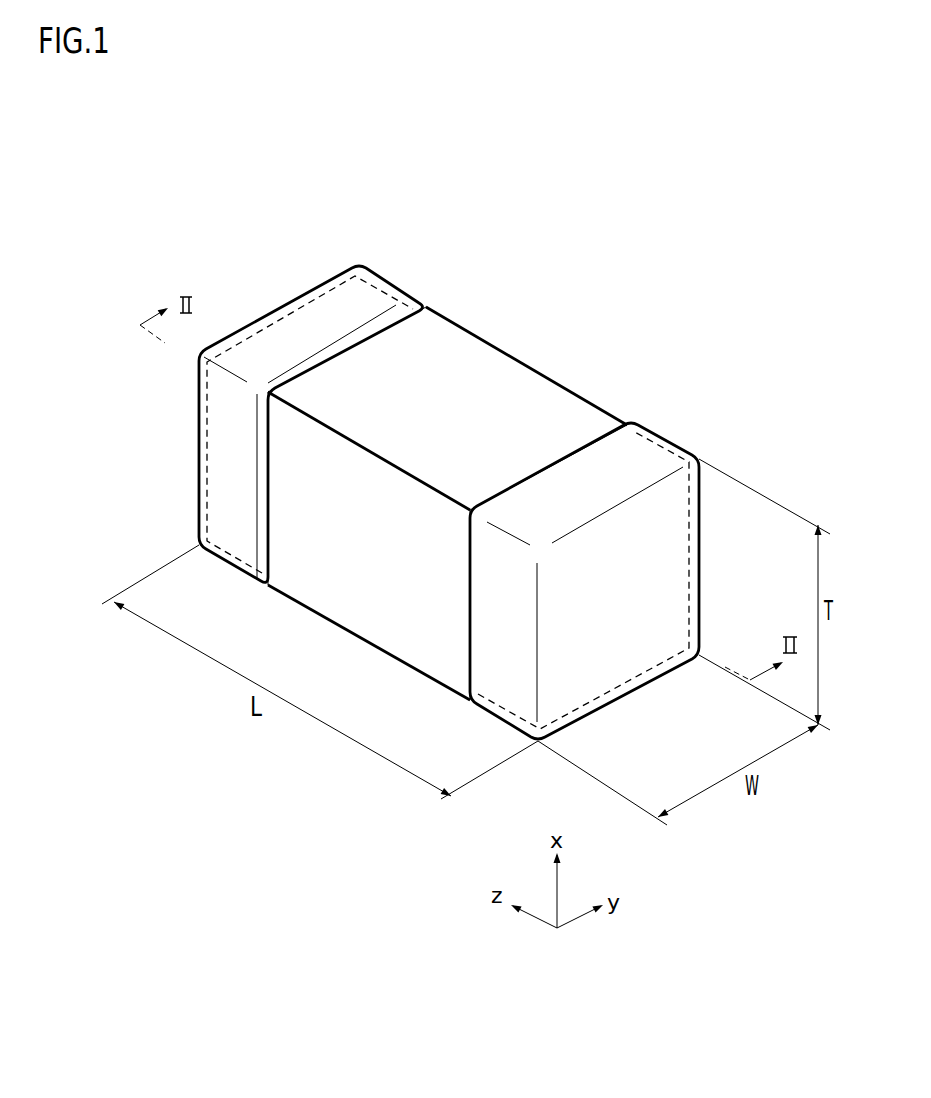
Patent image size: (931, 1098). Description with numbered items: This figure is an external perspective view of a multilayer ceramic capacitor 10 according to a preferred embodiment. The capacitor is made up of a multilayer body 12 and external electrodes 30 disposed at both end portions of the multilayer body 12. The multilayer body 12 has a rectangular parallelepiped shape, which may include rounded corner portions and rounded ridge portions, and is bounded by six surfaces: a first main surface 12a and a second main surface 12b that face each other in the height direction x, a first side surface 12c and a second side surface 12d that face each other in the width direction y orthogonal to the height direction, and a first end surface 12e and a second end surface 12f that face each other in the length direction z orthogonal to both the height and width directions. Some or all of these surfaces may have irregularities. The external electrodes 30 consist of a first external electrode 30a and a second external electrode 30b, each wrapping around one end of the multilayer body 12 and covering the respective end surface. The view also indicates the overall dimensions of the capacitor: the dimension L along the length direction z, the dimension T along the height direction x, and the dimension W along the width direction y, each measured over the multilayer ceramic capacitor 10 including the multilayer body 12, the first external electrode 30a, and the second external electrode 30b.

The multilayer ceramic capacitor 10 is at (250, 195).
The multilayer body 12 is at (569, 387).
The first main surface 12a is at (522, 393).
The second main surface 12b is at (340, 607).
The first side surface 12c is at (403, 628).
The second side surface 12d is at (479, 372).
The first end surface 12e is at (297, 328).
The second end surface 12f is at (658, 550).
The external electrodes 30 is at (483, 455).
The first external electrode 30a is at (375, 264).
The second external electrode 30b is at (666, 431).